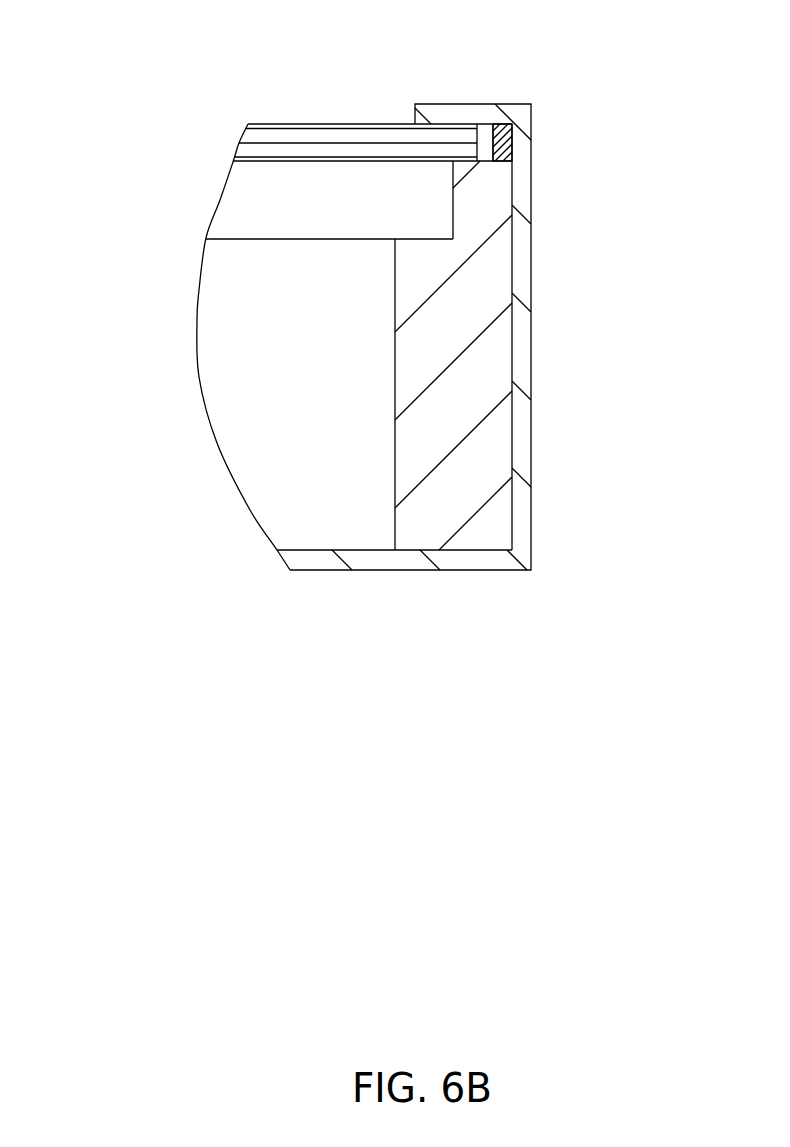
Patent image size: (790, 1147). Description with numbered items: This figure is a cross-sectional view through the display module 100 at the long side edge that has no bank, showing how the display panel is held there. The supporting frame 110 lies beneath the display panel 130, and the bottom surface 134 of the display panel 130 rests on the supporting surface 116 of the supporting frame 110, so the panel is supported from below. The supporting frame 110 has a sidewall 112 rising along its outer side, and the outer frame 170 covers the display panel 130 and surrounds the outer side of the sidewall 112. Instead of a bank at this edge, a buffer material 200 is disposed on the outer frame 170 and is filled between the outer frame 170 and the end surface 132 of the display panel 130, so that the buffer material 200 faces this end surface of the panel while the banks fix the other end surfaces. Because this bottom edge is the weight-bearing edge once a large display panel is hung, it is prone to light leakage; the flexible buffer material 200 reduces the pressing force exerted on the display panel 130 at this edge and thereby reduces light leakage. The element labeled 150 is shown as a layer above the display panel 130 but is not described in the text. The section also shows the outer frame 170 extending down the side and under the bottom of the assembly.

The display module 100 is at (125, 54).
The supporting frame 110 is at (378, 348).
The sidewall 112 is at (498, 283).
The supporting surface 116 is at (483, 163).
The display panel 130 is at (297, 133).
The end surface 132 is at (479, 137).
The bottom surface 134 is at (410, 160).
The cover plate 150 is at (259, 125).
The outer frame 170 is at (520, 415).
The buffer material 200 is at (508, 130).